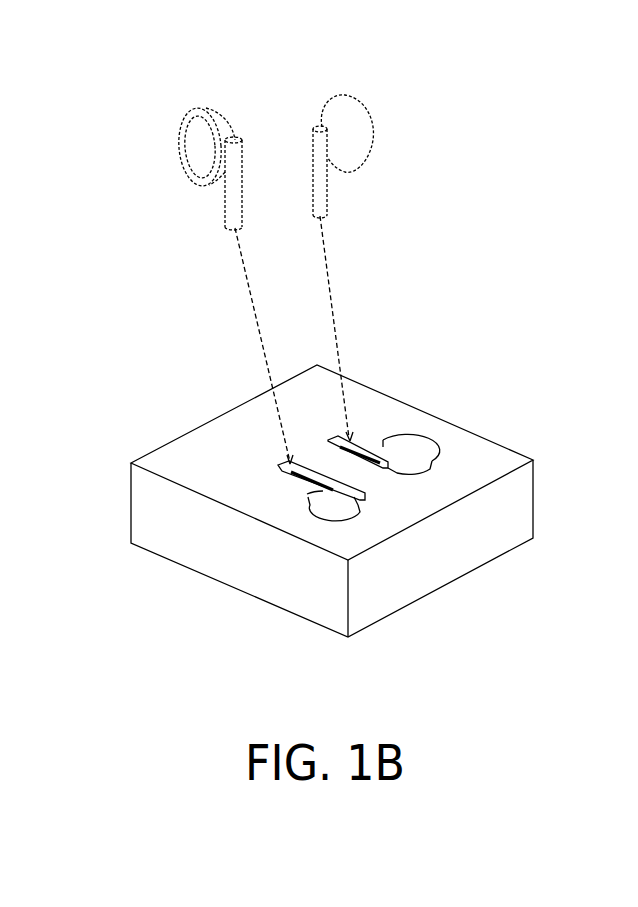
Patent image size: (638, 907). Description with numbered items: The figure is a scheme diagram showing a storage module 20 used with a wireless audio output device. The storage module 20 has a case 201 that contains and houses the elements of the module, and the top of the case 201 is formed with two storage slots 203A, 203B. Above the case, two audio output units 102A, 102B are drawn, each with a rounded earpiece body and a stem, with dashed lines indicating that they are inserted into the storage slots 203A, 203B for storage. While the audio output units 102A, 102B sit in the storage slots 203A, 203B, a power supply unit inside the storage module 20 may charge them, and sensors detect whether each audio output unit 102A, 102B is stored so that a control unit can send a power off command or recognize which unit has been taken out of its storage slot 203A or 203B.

The storage module 20 is at (355, 508).
The case 201 is at (222, 570).
The storage slot 203A is at (421, 440).
The storage slot 203B is at (320, 505).
The audio output unit 102A is at (353, 143).
The audio output unit 102B is at (193, 158).